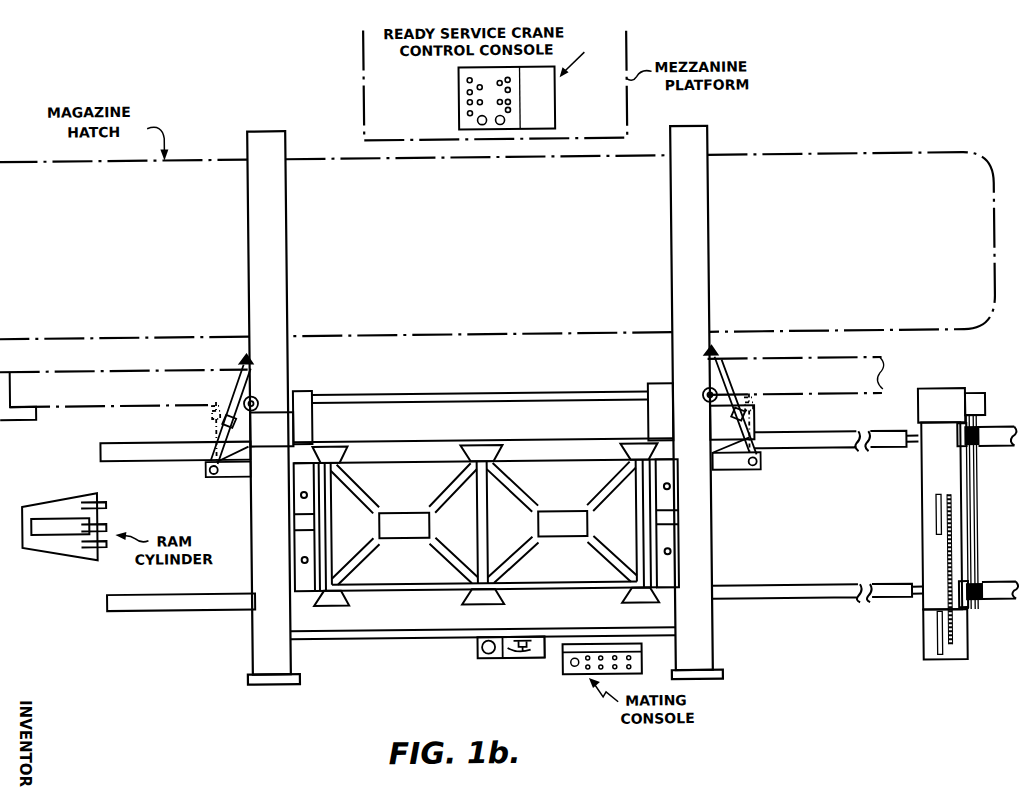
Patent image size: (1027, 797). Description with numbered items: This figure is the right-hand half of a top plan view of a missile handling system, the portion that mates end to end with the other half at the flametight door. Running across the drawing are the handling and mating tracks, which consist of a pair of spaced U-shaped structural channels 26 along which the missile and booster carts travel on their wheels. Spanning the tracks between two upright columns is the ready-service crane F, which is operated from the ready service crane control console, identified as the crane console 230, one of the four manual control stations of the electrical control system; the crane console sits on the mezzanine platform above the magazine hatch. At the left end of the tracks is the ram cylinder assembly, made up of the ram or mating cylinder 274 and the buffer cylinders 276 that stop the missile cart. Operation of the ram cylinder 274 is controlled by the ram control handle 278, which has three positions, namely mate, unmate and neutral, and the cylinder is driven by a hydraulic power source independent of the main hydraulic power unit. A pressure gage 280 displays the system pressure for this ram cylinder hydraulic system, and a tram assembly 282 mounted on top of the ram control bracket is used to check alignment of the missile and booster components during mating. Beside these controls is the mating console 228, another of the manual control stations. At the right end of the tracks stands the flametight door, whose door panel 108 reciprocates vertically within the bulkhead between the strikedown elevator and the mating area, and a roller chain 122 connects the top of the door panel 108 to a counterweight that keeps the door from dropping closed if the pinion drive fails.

The Crane Console 230 is at (462, 97).
The ram or mating cylinder 274 is at (38, 514).
The buffer cylinders 276 is at (100, 506).
The U-shaped structural channels 26 is at (150, 608).
The door panel 108 is at (925, 500).
The roller chain 122 is at (945, 553).
The pressure gage 280 is at (478, 649).
The tram assembly 282 is at (520, 636).
The ram control handle 278 is at (542, 659).
The Mating Console 228 is at (565, 676).
The Ready-Service Crane F is at (591, 412).